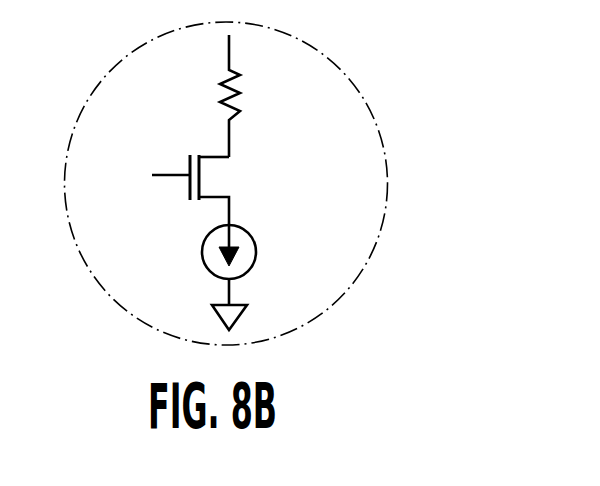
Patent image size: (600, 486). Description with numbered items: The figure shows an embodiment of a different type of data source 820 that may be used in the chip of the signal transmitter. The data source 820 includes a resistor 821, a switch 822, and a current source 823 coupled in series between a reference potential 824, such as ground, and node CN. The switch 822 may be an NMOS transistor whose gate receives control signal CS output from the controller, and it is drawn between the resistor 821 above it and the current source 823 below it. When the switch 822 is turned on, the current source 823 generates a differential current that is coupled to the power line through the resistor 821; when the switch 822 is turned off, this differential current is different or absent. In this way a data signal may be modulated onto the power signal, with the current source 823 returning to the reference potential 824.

The data source 820 is at (382, 140).
The resistor 821 is at (238, 92).
The switch 822 is at (202, 180).
The current source 823 is at (253, 240).
The reference potential 824 is at (248, 307).